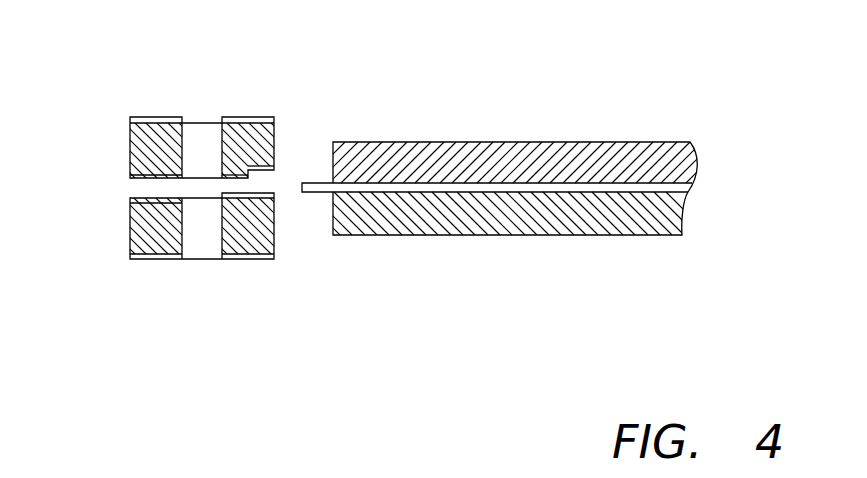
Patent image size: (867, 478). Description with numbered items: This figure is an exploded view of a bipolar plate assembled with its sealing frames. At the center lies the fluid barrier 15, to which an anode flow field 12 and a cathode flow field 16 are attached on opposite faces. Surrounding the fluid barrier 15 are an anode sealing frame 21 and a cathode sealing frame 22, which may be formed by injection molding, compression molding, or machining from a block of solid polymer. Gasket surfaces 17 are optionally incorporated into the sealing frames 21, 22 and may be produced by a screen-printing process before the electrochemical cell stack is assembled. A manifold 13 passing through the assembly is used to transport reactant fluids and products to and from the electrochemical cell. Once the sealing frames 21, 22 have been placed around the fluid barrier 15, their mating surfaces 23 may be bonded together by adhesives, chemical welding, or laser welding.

The anode flow field 12 is at (518, 140).
The manifold 13 is at (203, 148).
The fluid barrier 15 is at (682, 188).
The cathode flow field 16 is at (518, 235).
The gasket surfaces 17 is at (152, 118).
The anode sealing frame 21 is at (130, 153).
The cathode sealing frame 22 is at (129, 233).
The mating surfaces 23 is at (148, 181).